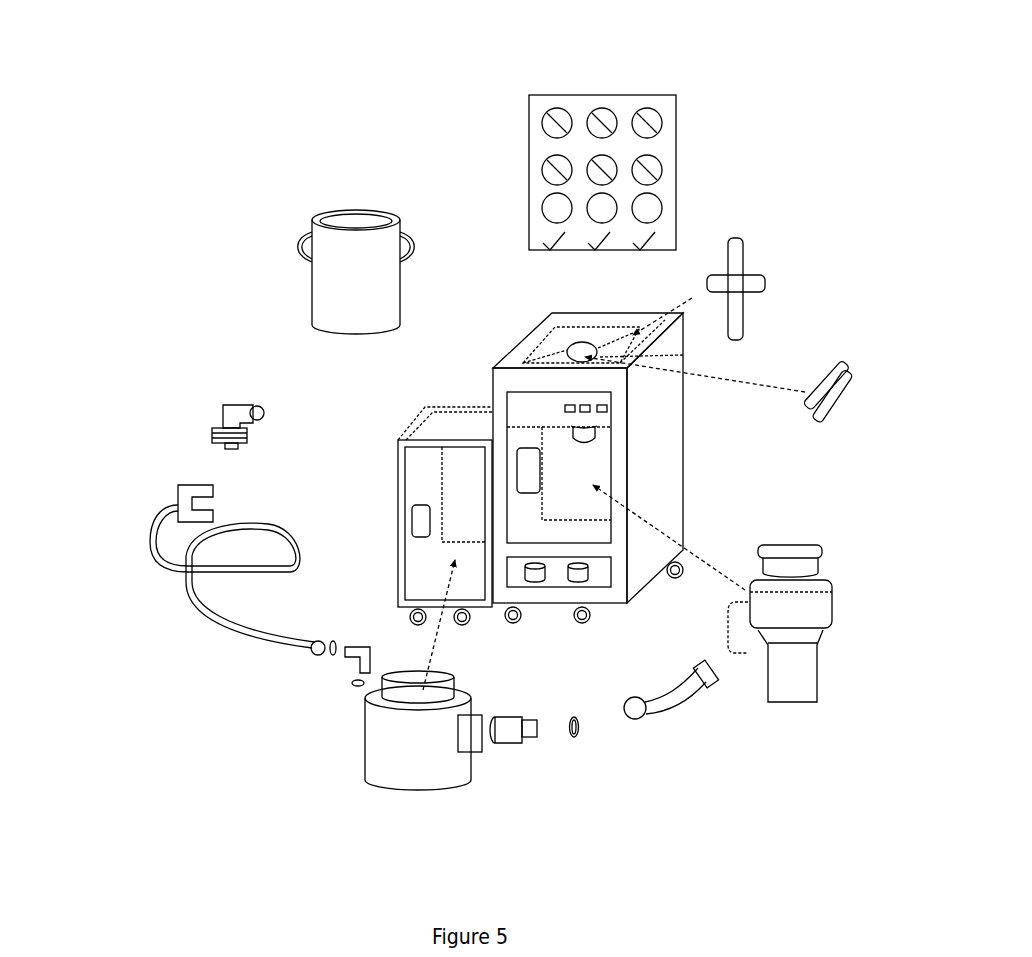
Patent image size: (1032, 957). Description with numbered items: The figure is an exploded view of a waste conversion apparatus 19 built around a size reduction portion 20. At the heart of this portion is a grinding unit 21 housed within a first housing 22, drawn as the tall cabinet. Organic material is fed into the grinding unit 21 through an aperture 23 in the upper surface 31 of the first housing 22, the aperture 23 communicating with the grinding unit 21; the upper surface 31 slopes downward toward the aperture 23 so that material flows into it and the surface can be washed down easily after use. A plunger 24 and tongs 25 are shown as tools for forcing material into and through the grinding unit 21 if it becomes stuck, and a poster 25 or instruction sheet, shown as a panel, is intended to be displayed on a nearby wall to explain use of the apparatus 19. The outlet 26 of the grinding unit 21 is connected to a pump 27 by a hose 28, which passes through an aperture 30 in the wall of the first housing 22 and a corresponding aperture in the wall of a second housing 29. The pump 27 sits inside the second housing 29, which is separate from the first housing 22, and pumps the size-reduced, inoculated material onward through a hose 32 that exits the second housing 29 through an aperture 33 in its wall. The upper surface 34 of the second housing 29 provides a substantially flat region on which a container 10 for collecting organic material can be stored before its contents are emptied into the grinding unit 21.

The waste conversion apparatus 19 is at (172, 253).
The container 10 is at (328, 205).
The size reduction portion 20 is at (707, 233).
The grinding unit 21 is at (800, 653).
The first housing 22 is at (652, 490).
The aperture 23 is at (567, 335).
The plunger 24 is at (760, 265).
The tongs 25 is at (535, 107).
The outlet 26 is at (747, 658).
The pump 27 is at (355, 760).
The hose 28 is at (670, 715).
The second housing 29 is at (397, 453).
The aperture 30 is at (532, 490).
The upper surface 31 is at (553, 352).
The hose 32 is at (185, 645).
The aperture 33 is at (405, 542).
The upper surface 34 is at (450, 418).